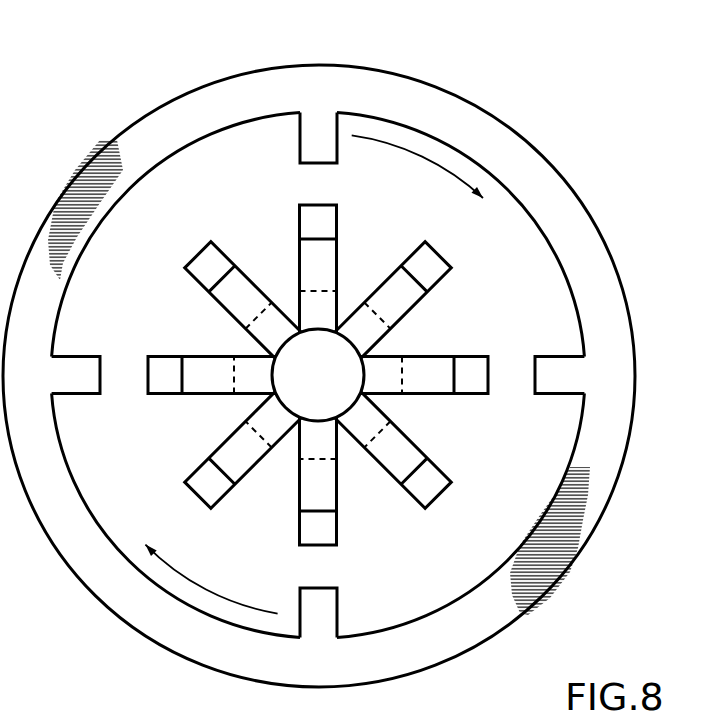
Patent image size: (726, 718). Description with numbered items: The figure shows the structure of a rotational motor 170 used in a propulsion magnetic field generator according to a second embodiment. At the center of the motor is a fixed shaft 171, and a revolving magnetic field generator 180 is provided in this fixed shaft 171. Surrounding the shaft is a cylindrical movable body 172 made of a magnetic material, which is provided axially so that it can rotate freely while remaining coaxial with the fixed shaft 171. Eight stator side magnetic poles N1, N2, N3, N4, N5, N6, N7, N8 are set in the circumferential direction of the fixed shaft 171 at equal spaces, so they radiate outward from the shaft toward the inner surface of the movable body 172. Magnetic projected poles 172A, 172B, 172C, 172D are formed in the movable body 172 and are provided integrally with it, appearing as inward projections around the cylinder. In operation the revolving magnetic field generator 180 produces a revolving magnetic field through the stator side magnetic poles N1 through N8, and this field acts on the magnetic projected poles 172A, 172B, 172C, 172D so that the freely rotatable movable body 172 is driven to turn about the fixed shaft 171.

The rotational motor 170 is at (480, 73).
The fixed shaft 171 is at (338, 390).
The cylindrical movable body 172 is at (510, 158).
The magnetic projected pole 172A is at (311, 149).
The magnetic projected pole 172B is at (555, 357).
The magnetic projected pole 172C is at (330, 607).
The magnetic projected pole 172D is at (88, 390).
The stator side magnetic pole N1 is at (310, 220).
The stator side magnetic pole N2 is at (420, 252).
The stator side magnetic pole N3 is at (470, 356).
The stator side magnetic pole N4 is at (452, 492).
The stator side magnetic pole N5 is at (300, 533).
The stator side magnetic pole N6 is at (200, 497).
The stator side magnetic pole N7 is at (165, 355).
The stator side magnetic pole N8 is at (196, 258).
The revolving magnetic field generator 180 is at (436, 523).